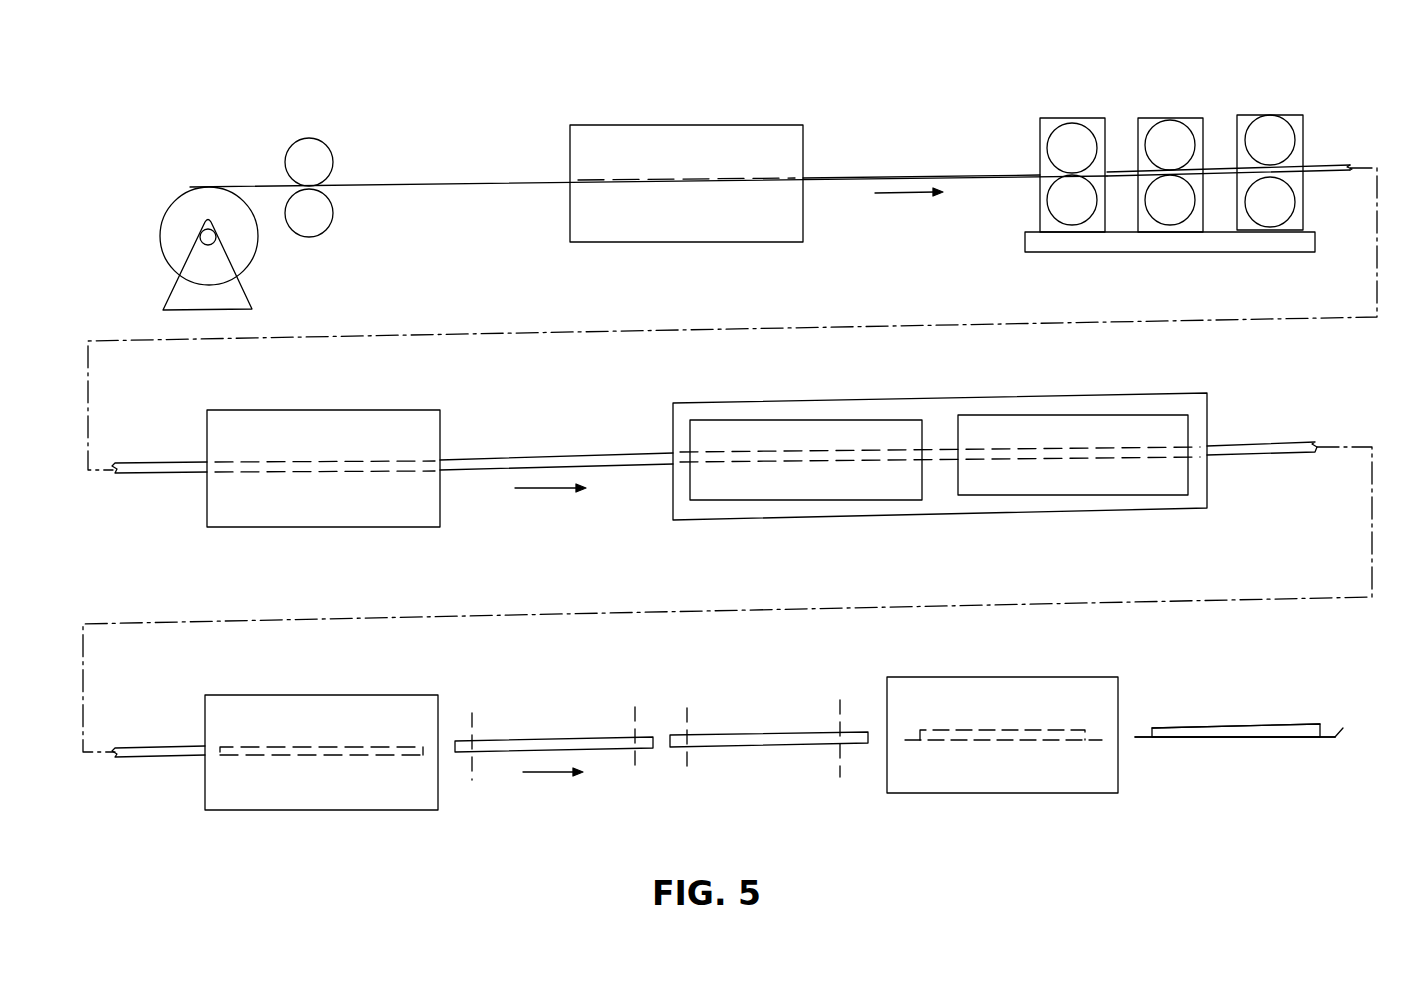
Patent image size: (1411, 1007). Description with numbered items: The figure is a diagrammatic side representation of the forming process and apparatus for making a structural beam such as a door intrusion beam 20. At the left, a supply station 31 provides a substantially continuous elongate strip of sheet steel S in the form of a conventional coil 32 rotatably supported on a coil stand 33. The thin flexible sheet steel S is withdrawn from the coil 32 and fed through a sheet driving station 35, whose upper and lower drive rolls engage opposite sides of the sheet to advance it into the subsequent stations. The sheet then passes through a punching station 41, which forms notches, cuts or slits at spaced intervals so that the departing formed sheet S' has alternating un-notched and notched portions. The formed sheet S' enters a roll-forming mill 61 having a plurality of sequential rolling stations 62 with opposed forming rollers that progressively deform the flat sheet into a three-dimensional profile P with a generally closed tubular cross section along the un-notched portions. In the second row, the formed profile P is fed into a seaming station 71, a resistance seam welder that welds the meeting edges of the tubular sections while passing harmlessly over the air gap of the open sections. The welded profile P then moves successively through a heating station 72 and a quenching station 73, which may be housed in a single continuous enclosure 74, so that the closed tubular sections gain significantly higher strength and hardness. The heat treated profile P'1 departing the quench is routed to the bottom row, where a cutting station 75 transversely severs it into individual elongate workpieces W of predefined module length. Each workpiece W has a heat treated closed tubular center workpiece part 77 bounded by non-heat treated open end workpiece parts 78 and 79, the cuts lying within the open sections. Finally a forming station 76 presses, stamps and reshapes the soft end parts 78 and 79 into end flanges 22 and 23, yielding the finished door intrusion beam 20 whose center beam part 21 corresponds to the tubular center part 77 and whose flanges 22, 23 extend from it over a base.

The door intrusion beam 20 is at (1256, 712).
The center beam part 21 is at (1035, 737).
The end flange 22 is at (1100, 738).
The end flange 23 is at (910, 743).
The supply station 31 is at (188, 200).
The coil 32 is at (182, 205).
The coil stand 33 is at (202, 260).
The sheet driving station 35 is at (343, 122).
The punching station 41 is at (673, 125).
The roll-forming mill 61 is at (1169, 156).
The rolling stations 62 is at (1063, 148).
The seaming station 71 is at (367, 425).
The heating station 72 is at (806, 430).
The quenching station 73 is at (1122, 422).
The enclosure 74 is at (940, 436).
The cutting station 75 is at (331, 707).
The forming station 76 is at (1121, 746).
The center workpiece part 77 is at (512, 750).
The end workpiece part 78 is at (645, 748).
The end workpiece part 79 is at (462, 752).
The sheet steel strip S is at (648, 155).
The formed sheet S' is at (921, 144).
The formed profile P is at (754, 299).
The heat treated profile P'1 is at (1262, 430).
The workpiece W is at (661, 762).